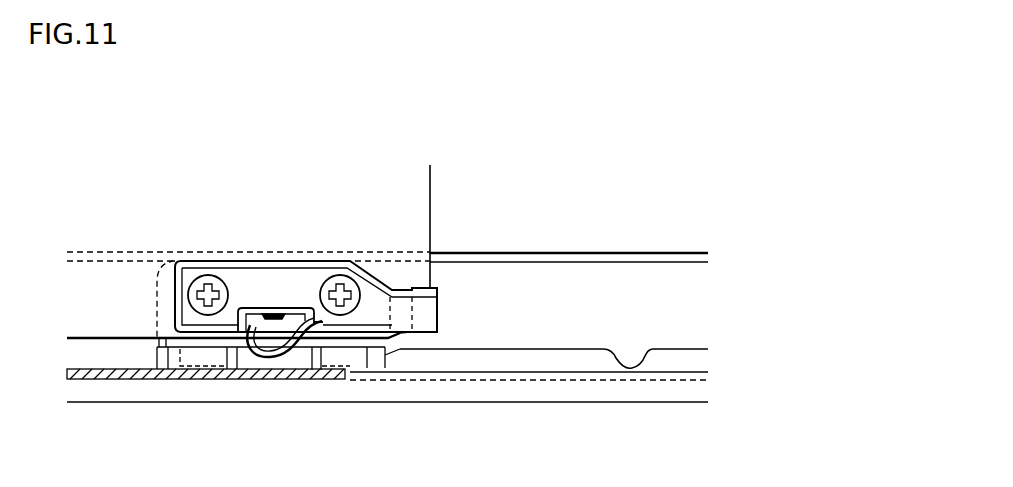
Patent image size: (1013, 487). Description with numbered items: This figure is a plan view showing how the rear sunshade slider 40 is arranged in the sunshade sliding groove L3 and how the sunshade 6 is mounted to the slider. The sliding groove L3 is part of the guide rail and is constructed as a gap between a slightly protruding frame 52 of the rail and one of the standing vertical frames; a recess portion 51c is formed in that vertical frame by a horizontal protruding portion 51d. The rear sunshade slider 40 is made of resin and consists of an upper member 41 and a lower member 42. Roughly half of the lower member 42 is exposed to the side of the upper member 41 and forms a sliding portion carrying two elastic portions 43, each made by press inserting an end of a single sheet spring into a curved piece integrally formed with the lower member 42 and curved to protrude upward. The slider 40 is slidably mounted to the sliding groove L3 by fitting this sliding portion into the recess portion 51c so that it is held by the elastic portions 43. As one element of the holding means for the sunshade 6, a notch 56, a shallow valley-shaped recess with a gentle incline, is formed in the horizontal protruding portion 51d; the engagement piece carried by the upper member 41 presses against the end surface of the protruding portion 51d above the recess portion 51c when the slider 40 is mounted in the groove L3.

The sunshade 6 is at (418, 183).
The rear sunshade slider 40 is at (243, 243).
The upper member 41 is at (286, 290).
The lower member 42 is at (157, 352).
The elastic portions 43 is at (208, 358).
The recess portion 51c is at (100, 358).
The horizontal protruding portion 51d is at (538, 356).
The protruding frame 52 is at (536, 259).
The notch 56 is at (614, 354).
The sliding groove L3 is at (603, 276).